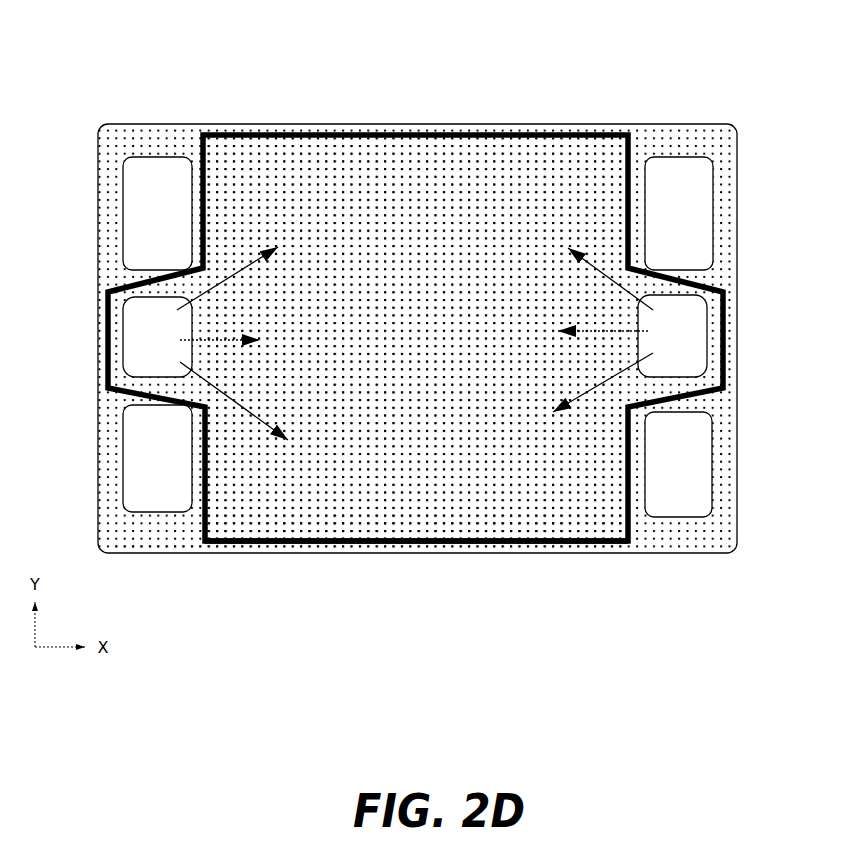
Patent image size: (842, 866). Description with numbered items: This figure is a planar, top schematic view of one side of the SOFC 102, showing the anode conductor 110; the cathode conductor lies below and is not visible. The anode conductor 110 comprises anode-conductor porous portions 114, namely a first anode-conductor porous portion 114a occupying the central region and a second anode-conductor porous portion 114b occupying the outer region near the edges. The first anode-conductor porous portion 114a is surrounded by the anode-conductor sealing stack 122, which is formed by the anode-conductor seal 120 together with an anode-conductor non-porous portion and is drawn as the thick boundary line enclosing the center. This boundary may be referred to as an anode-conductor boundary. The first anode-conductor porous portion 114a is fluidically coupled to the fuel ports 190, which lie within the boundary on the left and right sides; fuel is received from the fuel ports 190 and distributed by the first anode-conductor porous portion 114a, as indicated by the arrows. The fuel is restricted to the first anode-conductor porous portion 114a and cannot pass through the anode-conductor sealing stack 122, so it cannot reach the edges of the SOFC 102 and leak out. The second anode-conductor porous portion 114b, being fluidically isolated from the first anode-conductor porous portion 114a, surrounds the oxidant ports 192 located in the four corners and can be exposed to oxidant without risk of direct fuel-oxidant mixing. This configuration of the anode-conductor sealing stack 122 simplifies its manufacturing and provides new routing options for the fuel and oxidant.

The SOFC 102 is at (410, 339).
The anode conductor 110 is at (653, 520).
The anode-conductor porous portions 114 is at (510, 520).
The first anode-conductor porous portion 114a is at (428, 522).
The second anode-conductor porous portion 114b is at (183, 542).
The anode-conductor seal 120 is at (268, 543).
The anode-conductor sealing stack 122 is at (365, 540).
The fuel ports 190 is at (133, 320).
The oxidant ports 192 is at (133, 243).